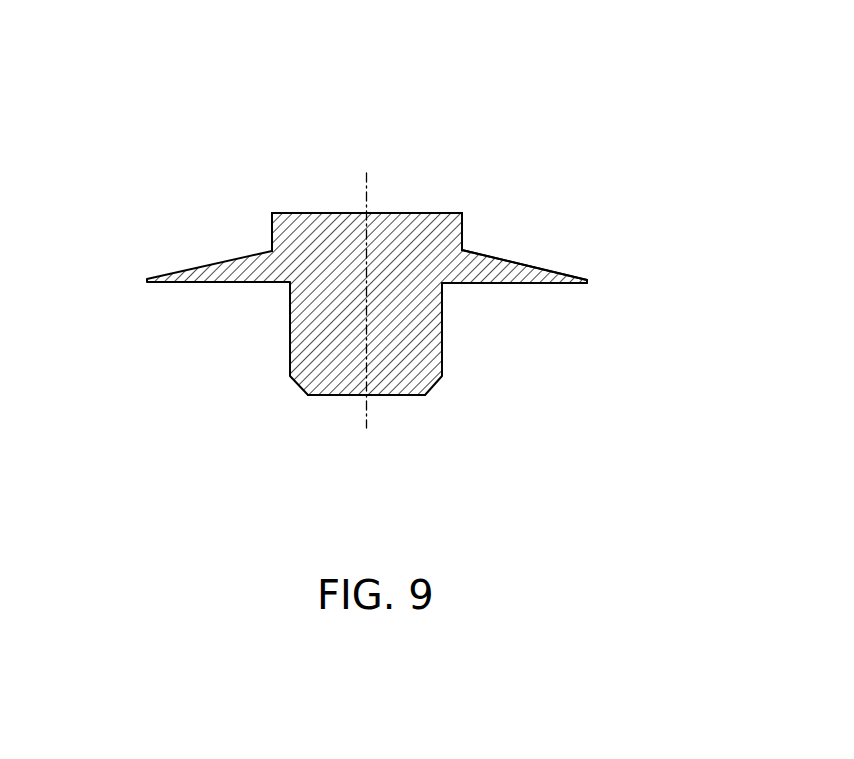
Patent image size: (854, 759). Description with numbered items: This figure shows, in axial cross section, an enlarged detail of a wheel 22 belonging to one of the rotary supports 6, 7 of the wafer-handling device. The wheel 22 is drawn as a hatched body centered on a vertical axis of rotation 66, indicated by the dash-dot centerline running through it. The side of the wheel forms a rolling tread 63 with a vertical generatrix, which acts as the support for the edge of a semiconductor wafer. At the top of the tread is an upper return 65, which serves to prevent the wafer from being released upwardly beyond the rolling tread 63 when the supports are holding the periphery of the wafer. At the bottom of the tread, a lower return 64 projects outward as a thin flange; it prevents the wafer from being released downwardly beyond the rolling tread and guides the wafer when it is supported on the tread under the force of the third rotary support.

The first rotary support 6 is at (327, 203).
The second rotary support 7 is at (388, 202).
The wheel 22 is at (435, 213).
The rolling tread 63 is at (270, 231).
The lower return 64 is at (527, 258).
The upper return 65 is at (467, 212).
The vertical axis of rotation 66 is at (367, 422).